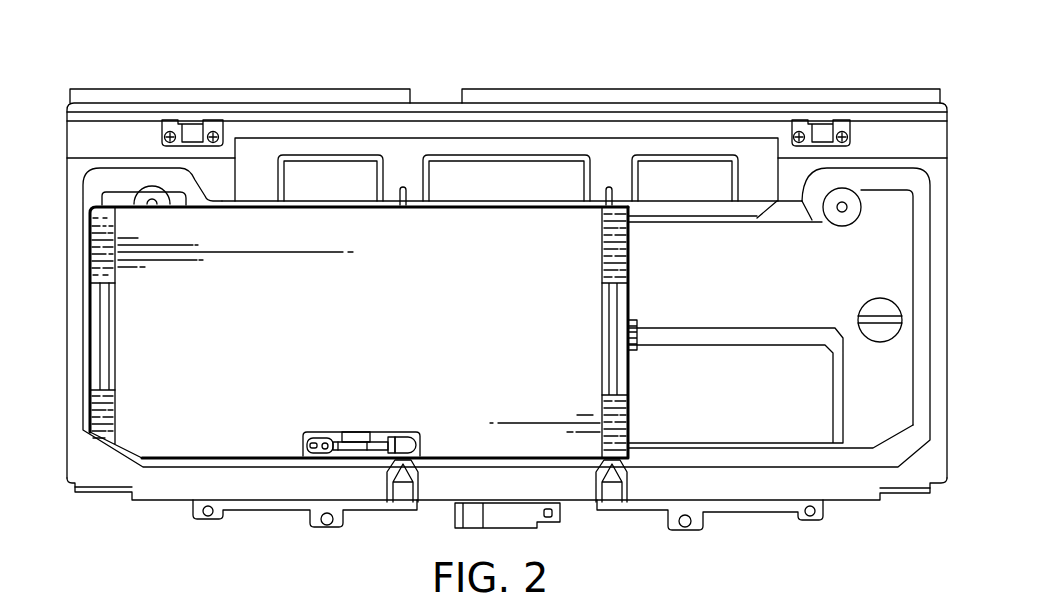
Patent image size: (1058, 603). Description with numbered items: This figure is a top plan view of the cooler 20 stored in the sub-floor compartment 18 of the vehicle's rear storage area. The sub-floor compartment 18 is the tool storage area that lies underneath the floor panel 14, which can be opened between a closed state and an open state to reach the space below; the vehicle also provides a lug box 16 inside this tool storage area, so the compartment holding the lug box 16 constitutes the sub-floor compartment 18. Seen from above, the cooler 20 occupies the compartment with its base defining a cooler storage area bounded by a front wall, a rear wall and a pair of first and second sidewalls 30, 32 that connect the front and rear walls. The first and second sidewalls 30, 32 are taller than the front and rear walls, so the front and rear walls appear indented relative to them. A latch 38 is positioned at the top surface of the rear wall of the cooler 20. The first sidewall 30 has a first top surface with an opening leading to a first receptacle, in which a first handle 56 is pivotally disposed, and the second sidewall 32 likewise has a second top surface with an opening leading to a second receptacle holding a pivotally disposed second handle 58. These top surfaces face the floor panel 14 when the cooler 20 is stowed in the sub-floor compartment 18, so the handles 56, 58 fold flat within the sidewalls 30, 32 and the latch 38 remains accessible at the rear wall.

The floor panel 14 is at (177, 410).
The lug box 16 is at (752, 88).
The sub-floor compartment 18 is at (800, 291).
The cooler 20 is at (326, 199).
The first sidewall 30 is at (612, 267).
The second sidewall 32 is at (100, 222).
The latch 38 is at (314, 457).
The first handle 56 is at (613, 312).
The second handle 58 is at (108, 306).